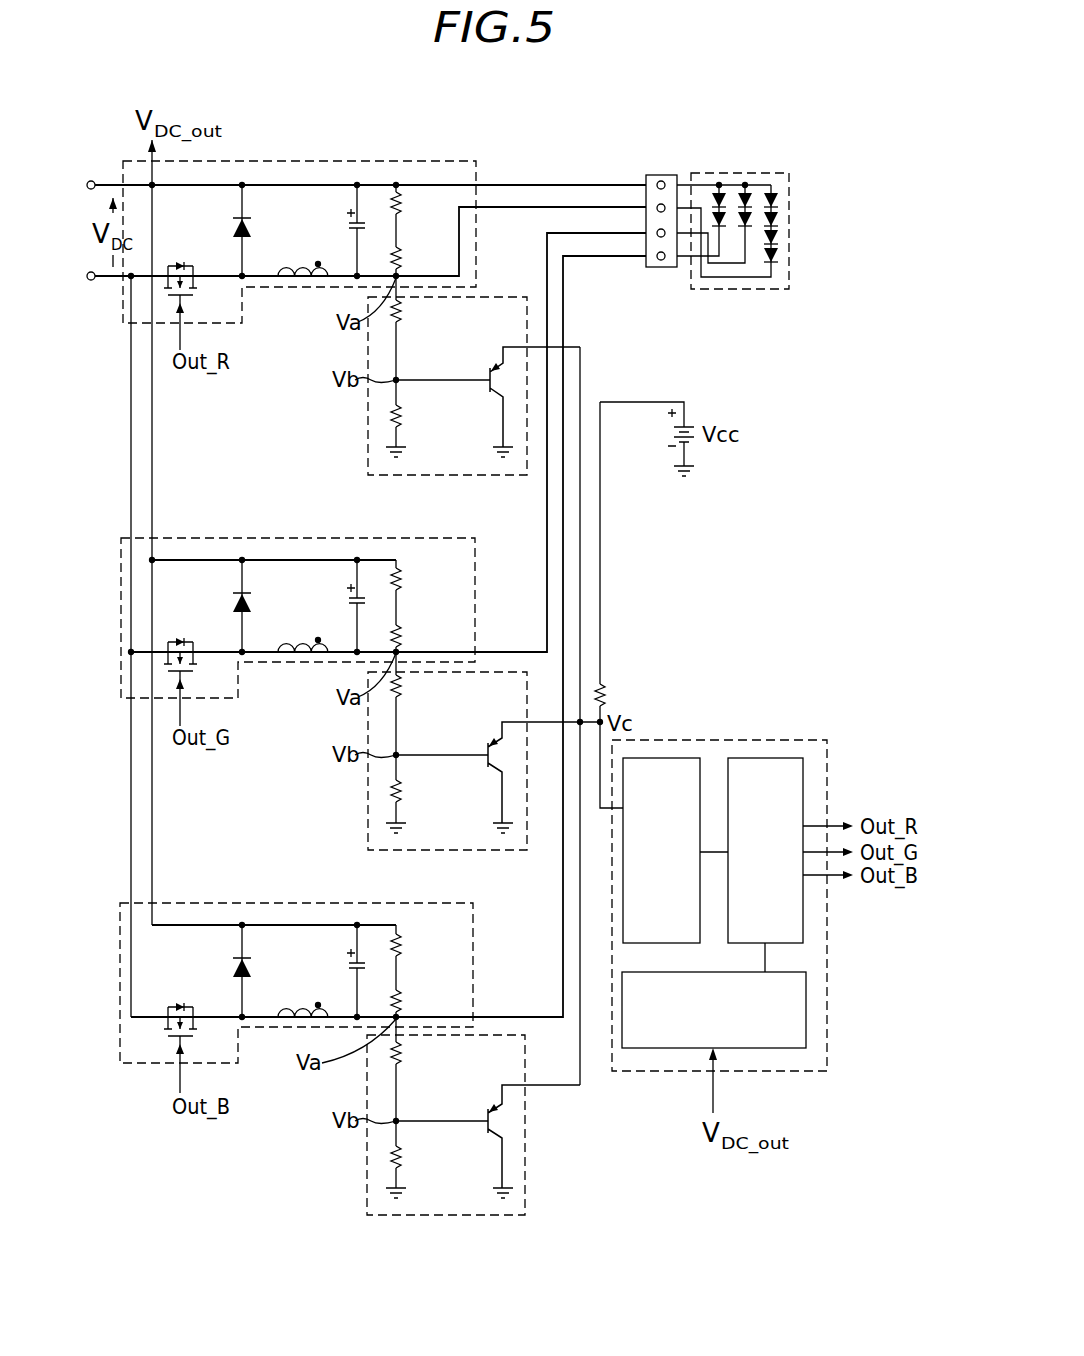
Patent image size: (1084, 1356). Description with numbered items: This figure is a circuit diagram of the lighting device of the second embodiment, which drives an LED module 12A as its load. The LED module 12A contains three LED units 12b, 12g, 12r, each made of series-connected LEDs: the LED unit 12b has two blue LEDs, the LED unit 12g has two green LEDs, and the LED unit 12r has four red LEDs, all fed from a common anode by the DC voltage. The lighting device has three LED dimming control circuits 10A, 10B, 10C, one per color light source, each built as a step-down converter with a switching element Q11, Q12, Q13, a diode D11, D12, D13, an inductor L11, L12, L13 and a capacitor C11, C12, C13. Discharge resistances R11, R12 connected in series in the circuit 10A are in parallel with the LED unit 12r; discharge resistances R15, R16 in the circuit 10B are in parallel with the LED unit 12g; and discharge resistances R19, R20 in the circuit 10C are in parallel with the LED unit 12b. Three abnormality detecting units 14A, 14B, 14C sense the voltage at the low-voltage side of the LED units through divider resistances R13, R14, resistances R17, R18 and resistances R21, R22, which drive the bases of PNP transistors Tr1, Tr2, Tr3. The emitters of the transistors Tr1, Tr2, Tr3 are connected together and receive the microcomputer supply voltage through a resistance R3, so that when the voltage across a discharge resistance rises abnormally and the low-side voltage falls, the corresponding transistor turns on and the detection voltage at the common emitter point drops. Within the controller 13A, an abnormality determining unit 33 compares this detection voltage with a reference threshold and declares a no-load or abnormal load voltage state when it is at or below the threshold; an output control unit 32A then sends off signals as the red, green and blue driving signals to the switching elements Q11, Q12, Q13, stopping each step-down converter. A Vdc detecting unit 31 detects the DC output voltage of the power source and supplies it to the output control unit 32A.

The LED dimming control circuit 10A is at (338, 160).
The LED dimming control circuit 10B is at (338, 537).
The LED dimming control circuit 10C is at (296, 983).
The LED module 12A is at (737, 203).
The LED unit 12b is at (714, 192).
The LED unit 12g is at (742, 200).
The LED unit 12r is at (778, 214).
The controller 13A is at (718, 929).
The abnormality detecting unit 14A is at (368, 447).
The abnormality detecting unit 14B is at (368, 822).
The abnormality detecting unit 14C is at (367, 1187).
The Vdc detecting unit 31 is at (768, 1050).
The output control unit 32A is at (769, 758).
The abnormality determining unit 33 is at (664, 758).
The switching element Q11 is at (186, 265).
The diode D11 is at (252, 232).
The inductor L11 is at (285, 269).
The capacitor C11 is at (347, 221).
The discharge resistance R11 is at (402, 205).
The discharge resistance R12 is at (402, 259).
The resistance R13 is at (402, 313).
The resistance R14 is at (402, 418).
The transistor Tr1 is at (490, 366).
The switching element Q12 is at (186, 641).
The diode D12 is at (252, 608).
The inductor L12 is at (285, 645).
The capacitor C12 is at (347, 597).
The discharge resistance R15 is at (402, 581).
The discharge resistance R16 is at (402, 637).
The resistance R17 is at (402, 688).
The resistance R18 is at (402, 793).
The transistor Tr2 is at (490, 741).
The switching element Q13 is at (186, 1006).
The diode D13 is at (252, 973).
The inductor L13 is at (285, 1010).
The capacitor C13 is at (347, 962).
The discharge resistance R19 is at (402, 947).
The discharge resistance R20 is at (402, 1002).
The resistance R21 is at (402, 1055).
The resistance R22 is at (402, 1159).
The transistor Tr3 is at (490, 1106).
The resistance R3 is at (606, 692).